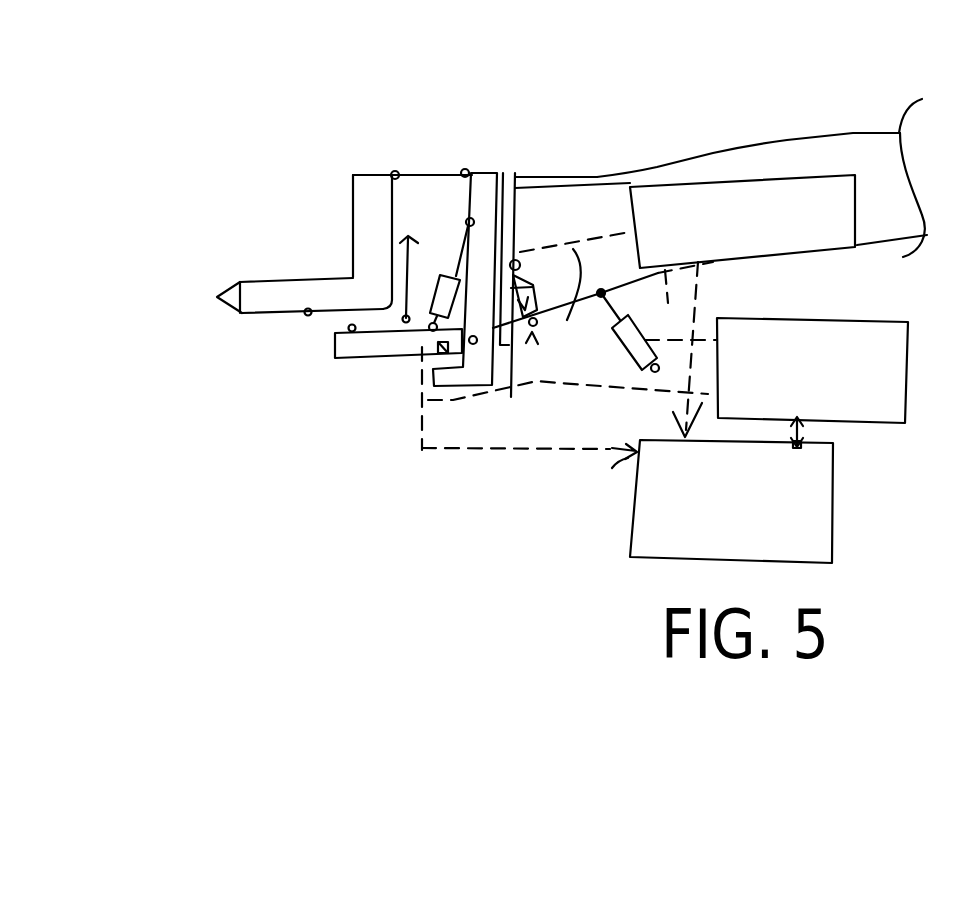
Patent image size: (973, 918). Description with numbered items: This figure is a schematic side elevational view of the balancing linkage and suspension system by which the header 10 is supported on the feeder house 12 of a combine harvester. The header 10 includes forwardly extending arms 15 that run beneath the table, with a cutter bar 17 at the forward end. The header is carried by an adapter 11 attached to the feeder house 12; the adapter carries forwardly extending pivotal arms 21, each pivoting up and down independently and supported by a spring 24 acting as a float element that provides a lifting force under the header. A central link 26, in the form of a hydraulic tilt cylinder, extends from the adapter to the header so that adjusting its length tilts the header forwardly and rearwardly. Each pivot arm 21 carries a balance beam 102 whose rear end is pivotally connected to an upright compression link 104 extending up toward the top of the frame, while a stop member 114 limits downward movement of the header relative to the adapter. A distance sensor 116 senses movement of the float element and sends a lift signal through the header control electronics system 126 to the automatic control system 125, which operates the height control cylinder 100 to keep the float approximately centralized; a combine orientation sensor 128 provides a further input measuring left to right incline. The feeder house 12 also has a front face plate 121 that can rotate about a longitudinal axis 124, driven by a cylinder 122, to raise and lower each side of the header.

The header 10 is at (303, 163).
The adapter 11 is at (497, 168).
The feeder house 12 is at (597, 177).
The forwardly extending arms 15 is at (370, 221).
The cutter bar 17 is at (214, 304).
The pivotal arms 21 is at (370, 356).
The spring 24 is at (458, 285).
The link 26 is at (418, 173).
The height control cylinder 100 is at (640, 327).
The balance beam 102 is at (430, 313).
The compression link 104 is at (390, 260).
The stop member 114 is at (423, 398).
The distance sensor 116 is at (443, 353).
The front face plate 121 is at (515, 177).
The cylinder 122 is at (532, 343).
The longitudinal axis 124 is at (567, 320).
The automatic control system 125 is at (883, 418).
The header control electronics system 126 is at (808, 545).
The combine orientation sensor 128 is at (787, 180).